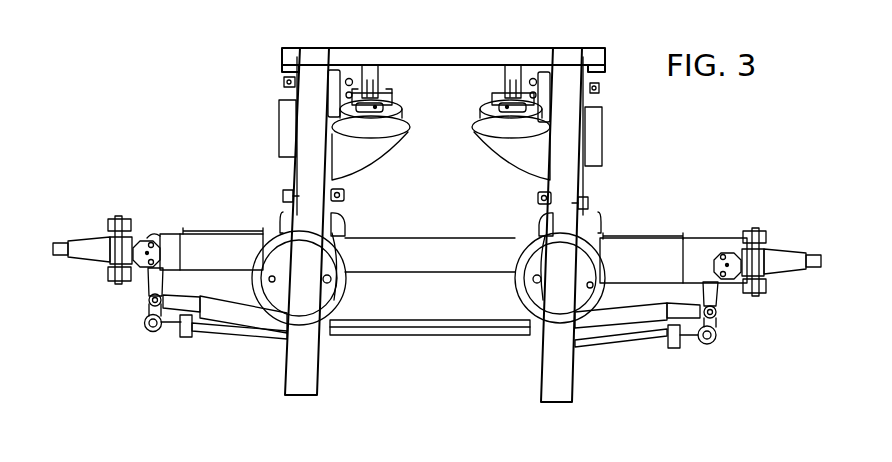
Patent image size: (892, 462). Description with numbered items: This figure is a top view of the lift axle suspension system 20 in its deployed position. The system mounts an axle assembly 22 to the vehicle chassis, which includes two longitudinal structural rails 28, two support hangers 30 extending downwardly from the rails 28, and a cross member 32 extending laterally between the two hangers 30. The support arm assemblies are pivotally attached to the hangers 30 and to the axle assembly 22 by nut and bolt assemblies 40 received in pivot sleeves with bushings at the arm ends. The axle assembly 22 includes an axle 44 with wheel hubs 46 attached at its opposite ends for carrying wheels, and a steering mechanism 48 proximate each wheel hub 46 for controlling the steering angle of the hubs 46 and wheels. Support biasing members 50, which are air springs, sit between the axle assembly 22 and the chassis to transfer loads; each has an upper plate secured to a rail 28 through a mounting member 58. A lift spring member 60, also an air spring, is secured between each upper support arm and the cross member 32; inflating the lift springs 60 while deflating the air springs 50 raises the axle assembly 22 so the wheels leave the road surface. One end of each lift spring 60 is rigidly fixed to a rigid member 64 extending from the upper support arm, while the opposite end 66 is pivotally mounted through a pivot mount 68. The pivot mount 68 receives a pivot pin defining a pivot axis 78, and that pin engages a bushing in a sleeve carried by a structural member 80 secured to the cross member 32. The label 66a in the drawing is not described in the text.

The lift axle suspension system 20 is at (240, 50).
The axle assembly 22 is at (452, 225).
The structural rails 28 is at (288, 381).
The support hangers 30 is at (282, 128).
The cross member 32 is at (428, 56).
The nut and bolt assemblies 40 is at (283, 78).
The axle 44 is at (428, 262).
The wheel hubs 46 is at (118, 213).
The steering mechanism 48 is at (122, 338).
The support biasing members 50 is at (268, 311).
The mounting member 58 is at (280, 233).
The lift spring member 60 is at (404, 132).
The rigid member 64 is at (376, 156).
The end of lift spring 66 is at (480, 111).
The bracket flange 66a is at (388, 100).
The pivot mount 68 is at (375, 112).
The pivot axis 78 is at (407, 93).
The structural member 80 is at (366, 66).